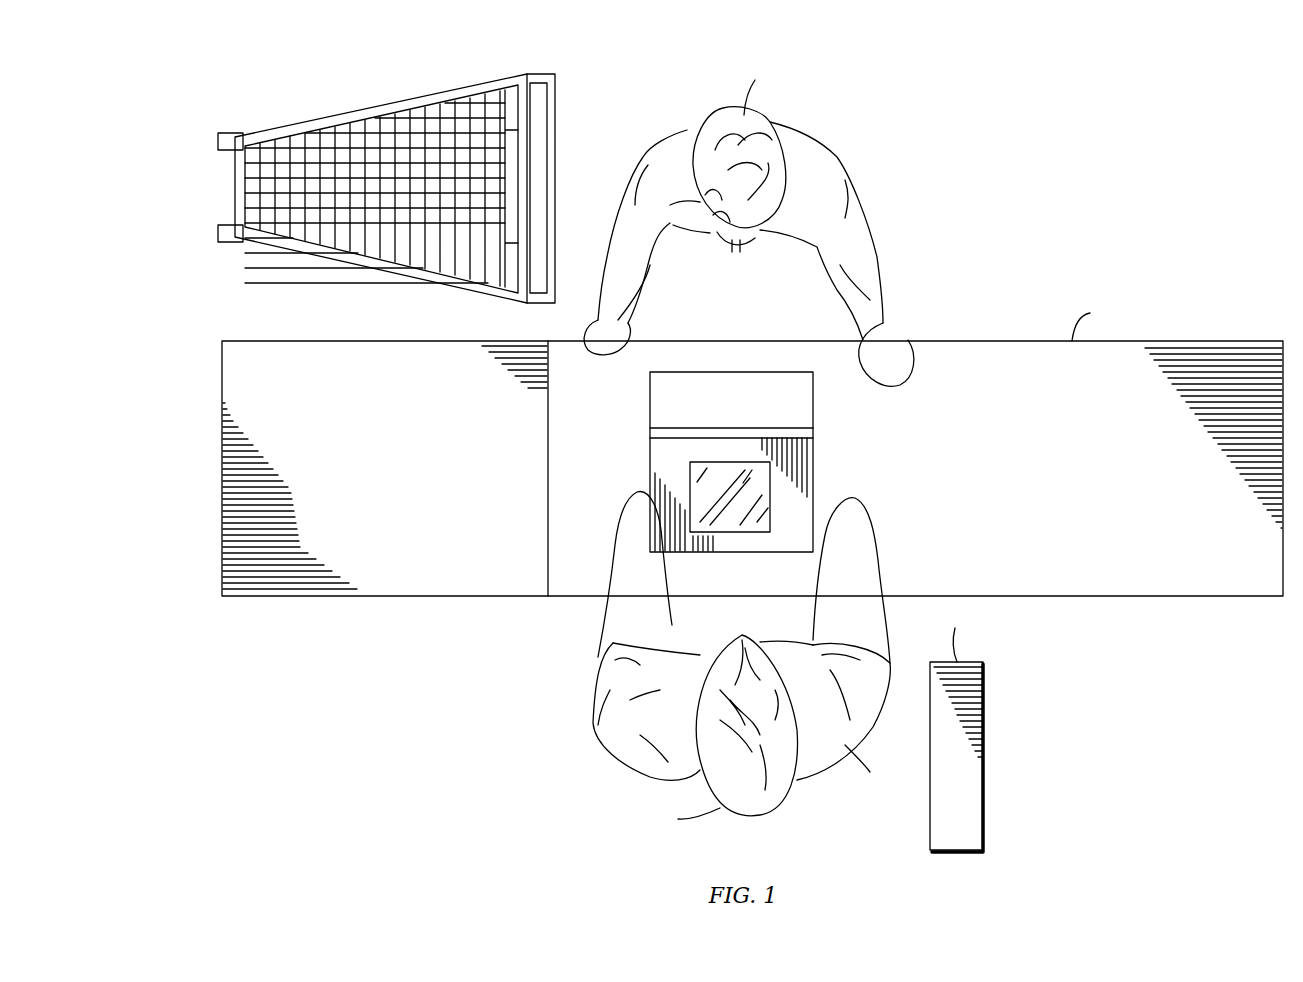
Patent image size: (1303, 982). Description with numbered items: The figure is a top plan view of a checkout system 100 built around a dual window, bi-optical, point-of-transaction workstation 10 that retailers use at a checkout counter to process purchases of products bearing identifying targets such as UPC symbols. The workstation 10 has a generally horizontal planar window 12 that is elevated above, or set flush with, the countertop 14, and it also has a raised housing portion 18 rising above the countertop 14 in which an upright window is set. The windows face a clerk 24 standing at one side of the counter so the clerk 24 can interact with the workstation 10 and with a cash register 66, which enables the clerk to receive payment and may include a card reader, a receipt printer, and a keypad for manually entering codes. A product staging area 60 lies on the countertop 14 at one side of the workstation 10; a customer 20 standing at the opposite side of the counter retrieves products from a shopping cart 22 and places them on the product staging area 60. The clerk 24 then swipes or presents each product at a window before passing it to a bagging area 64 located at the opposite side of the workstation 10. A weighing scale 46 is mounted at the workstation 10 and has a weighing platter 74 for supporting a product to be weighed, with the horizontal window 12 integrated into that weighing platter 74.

The checkout system 100 is at (901, 167).
The point-of-transaction workstation 10 is at (731, 362).
The generally horizontal planar window 12 is at (727, 517).
The countertop 14 is at (1236, 367).
The raised housing portion 18 is at (797, 370).
The customer 20 is at (805, 167).
The shopping cart 22 is at (328, 242).
The clerk 24 is at (818, 753).
The weighing scale 46 is at (772, 537).
The product staging area 60 is at (1085, 541).
The bagging area 64 is at (248, 487).
The cash register 66 is at (987, 778).
The weighing platter 74 is at (663, 458).